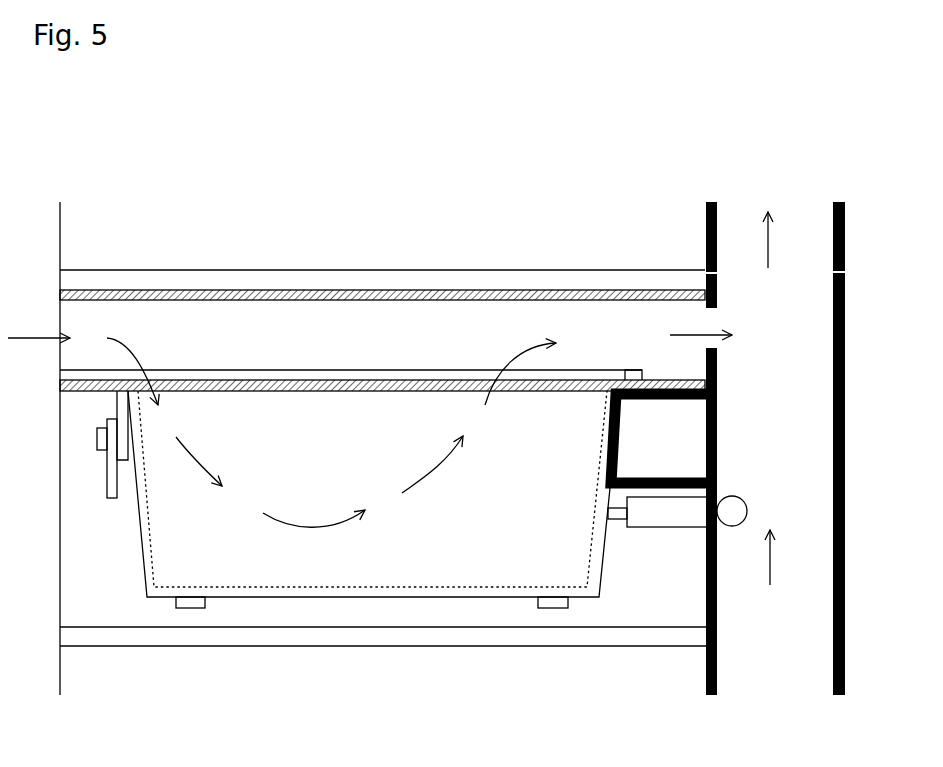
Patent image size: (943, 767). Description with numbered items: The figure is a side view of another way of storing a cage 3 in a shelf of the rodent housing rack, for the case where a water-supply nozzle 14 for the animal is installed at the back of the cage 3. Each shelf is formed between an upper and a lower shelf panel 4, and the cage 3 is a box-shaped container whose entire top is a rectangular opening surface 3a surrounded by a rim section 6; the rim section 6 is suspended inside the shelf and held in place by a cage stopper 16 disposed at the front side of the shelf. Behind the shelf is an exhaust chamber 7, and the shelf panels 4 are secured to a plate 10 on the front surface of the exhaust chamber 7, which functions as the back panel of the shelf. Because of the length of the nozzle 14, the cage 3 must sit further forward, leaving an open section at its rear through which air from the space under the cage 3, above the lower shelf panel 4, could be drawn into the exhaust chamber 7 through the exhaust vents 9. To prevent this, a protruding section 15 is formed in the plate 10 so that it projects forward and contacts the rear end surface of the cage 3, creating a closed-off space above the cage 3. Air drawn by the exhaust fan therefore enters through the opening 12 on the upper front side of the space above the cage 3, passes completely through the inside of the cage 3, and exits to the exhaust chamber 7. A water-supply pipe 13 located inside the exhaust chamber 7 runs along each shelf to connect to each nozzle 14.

The cage 3 is at (146, 546).
The opening surface 3a is at (581, 368).
The shelf panel 4 is at (213, 288).
The rim section 6 is at (629, 370).
The exhaust chamber 7 is at (777, 478).
The exhaust vent 9 is at (715, 318).
The plate 10 is at (717, 277).
The opening 12 is at (118, 321).
The water-supply pipe 13 is at (735, 523).
The water-supply nozzle 14 is at (656, 515).
The protruding section 15 is at (651, 448).
The cage stopper 16 is at (112, 483).